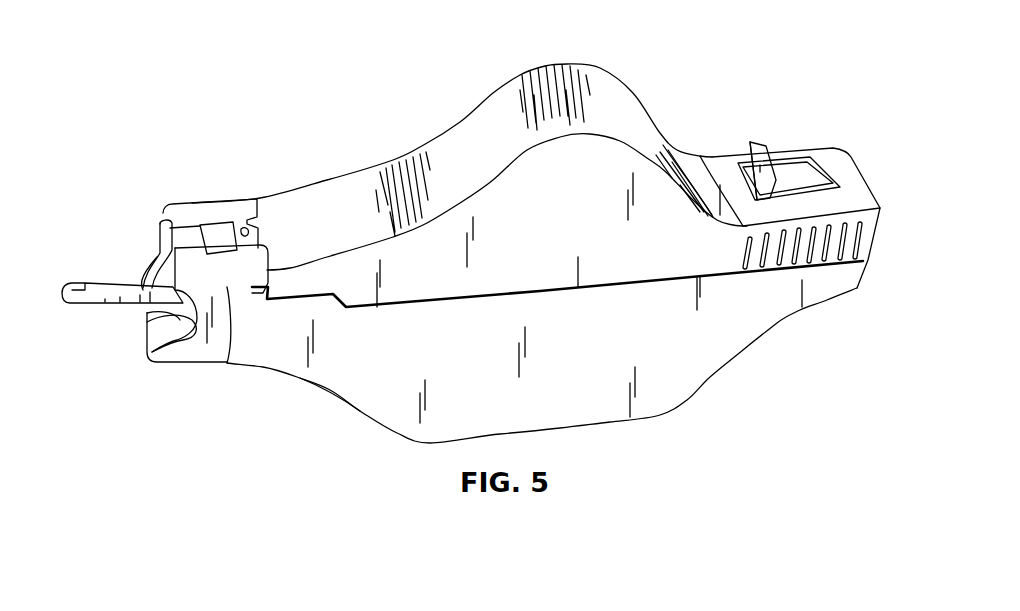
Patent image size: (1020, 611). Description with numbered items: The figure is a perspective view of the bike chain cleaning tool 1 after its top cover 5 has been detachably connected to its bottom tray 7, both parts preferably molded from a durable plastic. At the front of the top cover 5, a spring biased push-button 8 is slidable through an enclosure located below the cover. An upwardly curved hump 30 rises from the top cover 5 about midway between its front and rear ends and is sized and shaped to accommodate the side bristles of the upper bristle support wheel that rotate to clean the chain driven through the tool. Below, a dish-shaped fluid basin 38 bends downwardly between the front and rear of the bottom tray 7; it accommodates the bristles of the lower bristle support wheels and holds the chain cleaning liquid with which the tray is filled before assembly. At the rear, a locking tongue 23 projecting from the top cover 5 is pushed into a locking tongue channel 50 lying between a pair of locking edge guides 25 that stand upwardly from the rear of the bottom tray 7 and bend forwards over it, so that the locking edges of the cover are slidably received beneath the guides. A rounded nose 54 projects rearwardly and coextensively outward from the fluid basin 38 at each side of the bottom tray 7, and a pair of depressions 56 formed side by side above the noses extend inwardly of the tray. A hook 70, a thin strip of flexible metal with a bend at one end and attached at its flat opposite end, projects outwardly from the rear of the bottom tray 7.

The bike chain cleaning tool 1 is at (818, 112).
The top cover 5 is at (395, 155).
The bottom tray 7 is at (745, 352).
The push-button 8 is at (766, 142).
The locking tongue 23 is at (233, 243).
The locking edge guides 25 is at (221, 200).
The curved hump 30 is at (562, 68).
The dish-shaped fluid basin 38 is at (368, 417).
The locking tongue channel 50 is at (203, 233).
The rounded nose 54 is at (148, 275).
The depressions 56 is at (163, 237).
The hook 70 is at (92, 302).